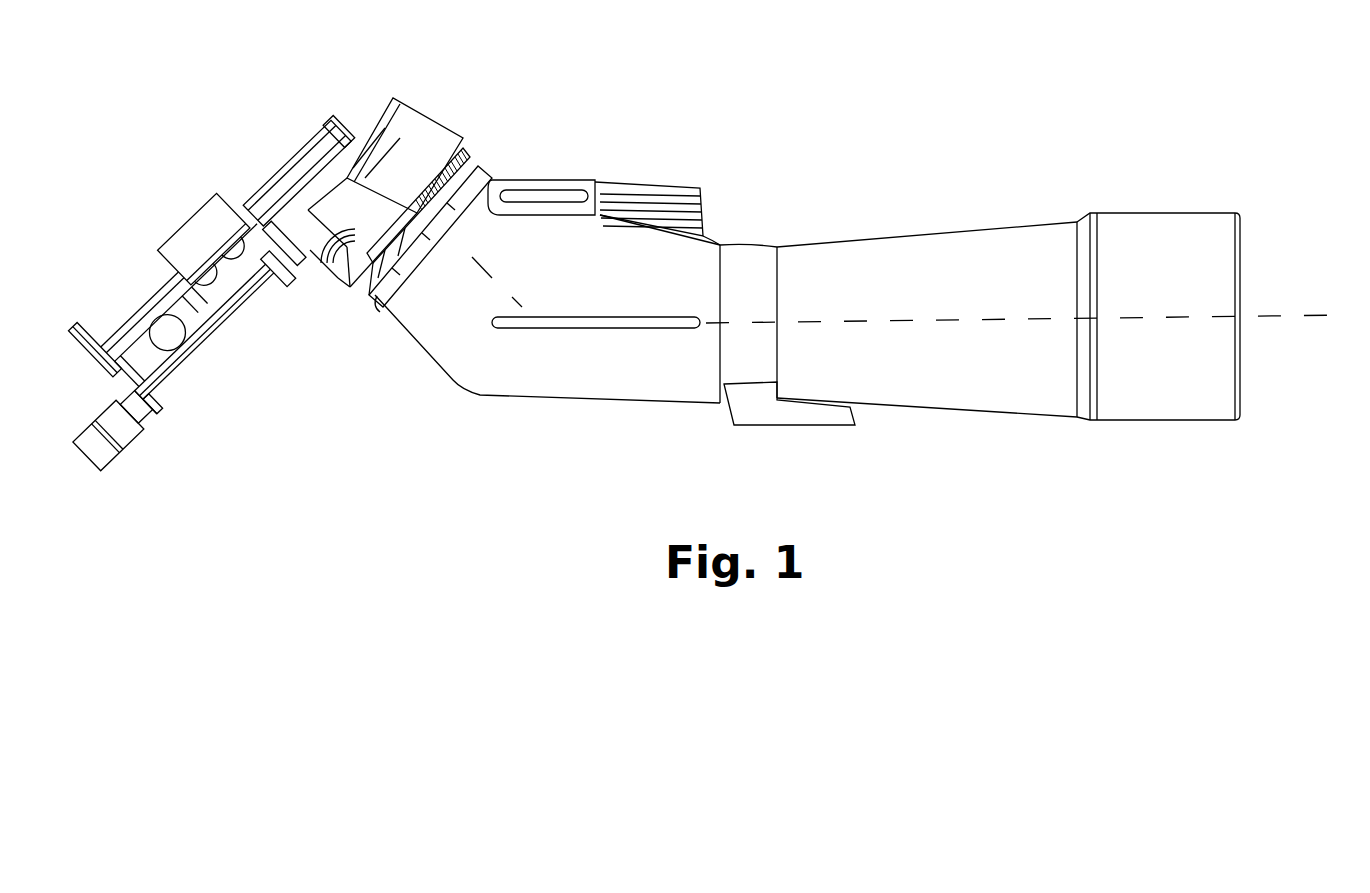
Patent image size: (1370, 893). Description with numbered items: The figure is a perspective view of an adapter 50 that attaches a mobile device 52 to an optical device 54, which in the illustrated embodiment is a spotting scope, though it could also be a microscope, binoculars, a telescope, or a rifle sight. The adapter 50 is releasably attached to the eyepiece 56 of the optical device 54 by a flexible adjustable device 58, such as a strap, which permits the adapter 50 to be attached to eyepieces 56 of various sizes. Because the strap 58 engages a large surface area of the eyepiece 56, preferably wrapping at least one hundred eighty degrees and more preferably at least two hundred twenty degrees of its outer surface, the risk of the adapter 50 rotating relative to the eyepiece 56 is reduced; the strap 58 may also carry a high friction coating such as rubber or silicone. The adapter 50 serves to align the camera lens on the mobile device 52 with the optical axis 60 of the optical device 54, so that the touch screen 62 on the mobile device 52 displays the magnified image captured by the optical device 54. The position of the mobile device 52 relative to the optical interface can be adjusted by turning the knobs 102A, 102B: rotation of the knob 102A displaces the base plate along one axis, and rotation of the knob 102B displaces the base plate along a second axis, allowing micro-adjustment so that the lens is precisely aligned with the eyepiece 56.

The adapter 50 is at (333, 307).
The mobile device 52 is at (298, 168).
The optical device 54 is at (803, 232).
The eyepiece 56 is at (478, 157).
The flexible adjustable device 58 is at (428, 130).
The optical axis 60 is at (1293, 312).
The touch screen 62 is at (163, 290).
The knob 102A is at (103, 458).
The knob 102B is at (167, 345).